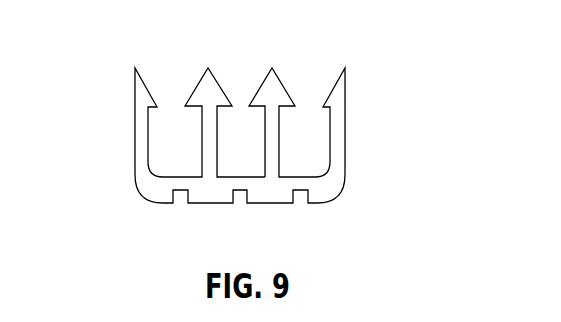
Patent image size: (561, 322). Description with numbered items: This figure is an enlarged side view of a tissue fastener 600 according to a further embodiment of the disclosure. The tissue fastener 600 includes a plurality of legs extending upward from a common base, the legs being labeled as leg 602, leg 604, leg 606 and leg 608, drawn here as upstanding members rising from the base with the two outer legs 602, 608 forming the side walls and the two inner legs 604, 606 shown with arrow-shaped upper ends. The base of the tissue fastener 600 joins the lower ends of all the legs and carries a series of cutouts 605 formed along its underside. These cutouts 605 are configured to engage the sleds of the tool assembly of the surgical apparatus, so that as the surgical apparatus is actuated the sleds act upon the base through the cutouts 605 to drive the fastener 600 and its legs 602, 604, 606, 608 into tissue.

The tissue fastener 600 is at (378, 62).
The leg 602 is at (143, 133).
The leg 604 is at (207, 141).
The cutouts 605 is at (240, 203).
The leg 606 is at (273, 141).
The second side wall 608 is at (338, 133).